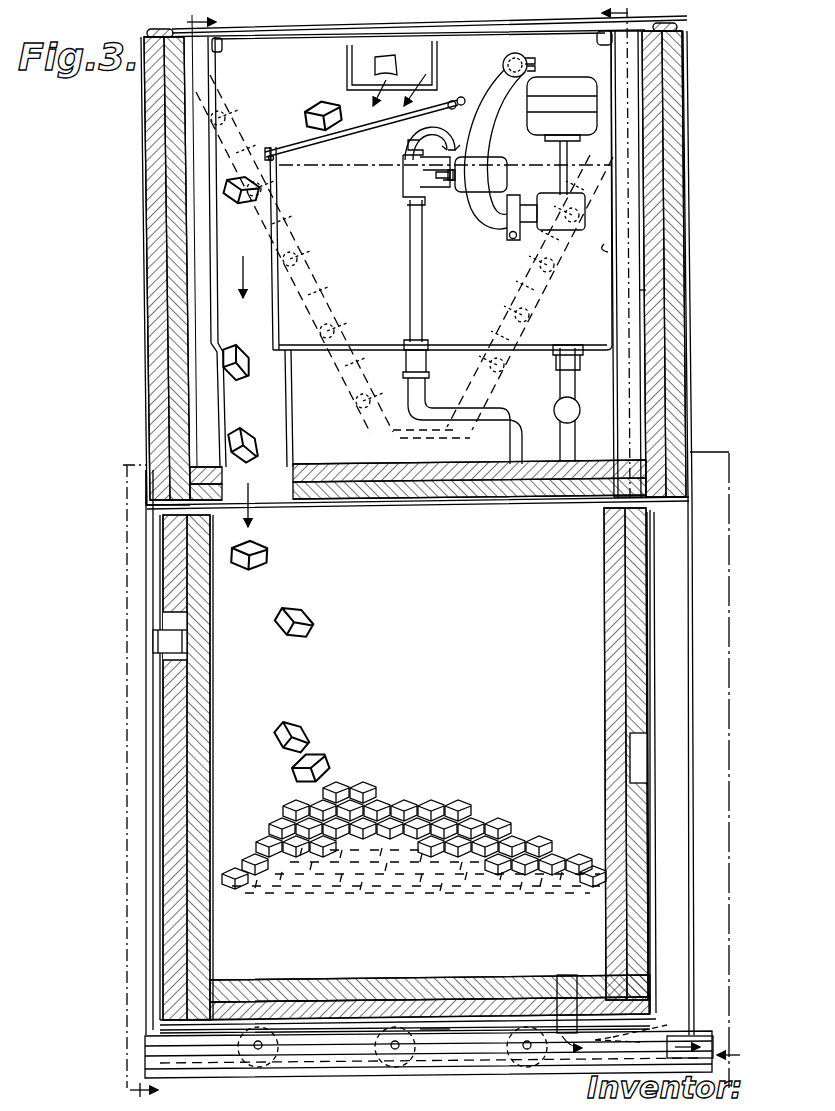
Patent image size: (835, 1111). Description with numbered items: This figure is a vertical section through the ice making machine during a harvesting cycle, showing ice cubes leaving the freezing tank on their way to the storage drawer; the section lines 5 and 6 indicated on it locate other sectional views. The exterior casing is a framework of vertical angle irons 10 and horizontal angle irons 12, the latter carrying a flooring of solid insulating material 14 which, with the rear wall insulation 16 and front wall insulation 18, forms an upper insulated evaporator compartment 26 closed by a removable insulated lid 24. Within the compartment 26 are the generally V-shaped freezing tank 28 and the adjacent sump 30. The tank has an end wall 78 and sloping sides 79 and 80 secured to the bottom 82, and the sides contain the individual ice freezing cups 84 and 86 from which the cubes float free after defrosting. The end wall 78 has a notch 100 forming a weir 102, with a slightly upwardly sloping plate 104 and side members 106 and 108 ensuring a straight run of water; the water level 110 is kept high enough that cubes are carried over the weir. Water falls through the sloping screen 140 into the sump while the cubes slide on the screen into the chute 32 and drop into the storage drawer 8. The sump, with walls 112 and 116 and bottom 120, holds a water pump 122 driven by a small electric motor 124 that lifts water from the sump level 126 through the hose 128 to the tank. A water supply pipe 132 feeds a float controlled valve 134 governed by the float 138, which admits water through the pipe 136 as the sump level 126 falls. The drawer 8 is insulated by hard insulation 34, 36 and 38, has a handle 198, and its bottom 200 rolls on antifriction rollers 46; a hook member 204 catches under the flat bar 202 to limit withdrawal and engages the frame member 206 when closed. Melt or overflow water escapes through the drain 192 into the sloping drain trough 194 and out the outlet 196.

The section line 5- 5 is at (184, 556).
The section line 6- 6 is at (683, 534).
The storage drawer 8 is at (560, 607).
The vertical angle irons 10 is at (680, 735).
The horizontal angle irons 12 is at (160, 490).
The flooring of solid insulating material 14 is at (438, 495).
The vertical insulating material (rear wall) 16 is at (668, 273).
The vertical insulating material (front wall) 18 is at (152, 165).
The removable insulated lid 24 is at (556, 30).
The upper insulated evaporator compartment 26 is at (635, 228).
The freezing tank 28 is at (660, 293).
The sump 30 is at (458, 297).
The chute 32 is at (228, 243).
The hard insulation 34 is at (308, 990).
The hard insulation 36 is at (178, 773).
The hard insulation 38 is at (640, 847).
The anti-friction rollers 46 is at (258, 1066).
The end wall of tank 78 is at (240, 79).
The sloping side of freezing tank 79 is at (208, 95).
The sloping side of freezing tank 80 is at (672, 72).
The bottom of tank 82 is at (408, 437).
The ice freezing cups 84 is at (303, 251).
The ice freezing cups 86 is at (530, 260).
The notch 100 is at (349, 57).
The weir 102 is at (440, 61).
The plate 104 is at (425, 88).
The side member 106 is at (350, 72).
The side member 108 is at (458, 74).
The water level of tank 110 is at (362, 83).
The sump wall 112 is at (608, 246).
The sump wall 116 is at (272, 312).
The bottom of sump 120 is at (592, 338).
The water pump 122 is at (570, 213).
The electric motor 124 is at (580, 105).
The sump water level 126 is at (353, 166).
The hose 128 is at (500, 107).
The water supply pipe 132 is at (410, 268).
The float controlled valve 134 is at (405, 186).
The pipe 136 is at (410, 150).
The float 138 is at (466, 193).
The screen 140 is at (369, 124).
The drain 192 is at (567, 985).
The sloping drain trough 194 is at (457, 1033).
The outlet 196 is at (692, 1036).
The handle 198 is at (175, 638).
The bottom of drawer 200 is at (315, 1058).
The flat bar 202 is at (430, 1029).
The hook member 204 is at (665, 1010).
The frame member 206 is at (670, 1028).